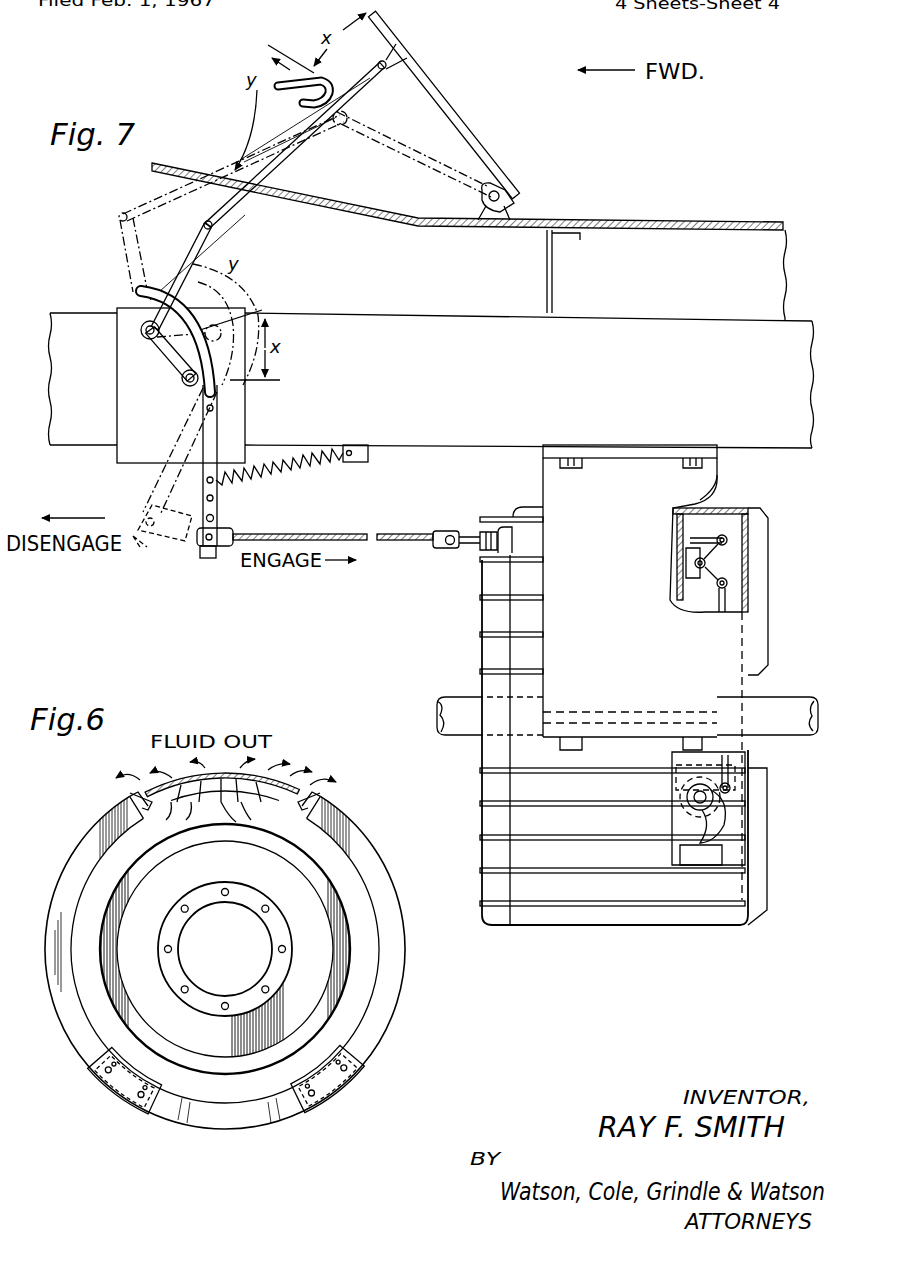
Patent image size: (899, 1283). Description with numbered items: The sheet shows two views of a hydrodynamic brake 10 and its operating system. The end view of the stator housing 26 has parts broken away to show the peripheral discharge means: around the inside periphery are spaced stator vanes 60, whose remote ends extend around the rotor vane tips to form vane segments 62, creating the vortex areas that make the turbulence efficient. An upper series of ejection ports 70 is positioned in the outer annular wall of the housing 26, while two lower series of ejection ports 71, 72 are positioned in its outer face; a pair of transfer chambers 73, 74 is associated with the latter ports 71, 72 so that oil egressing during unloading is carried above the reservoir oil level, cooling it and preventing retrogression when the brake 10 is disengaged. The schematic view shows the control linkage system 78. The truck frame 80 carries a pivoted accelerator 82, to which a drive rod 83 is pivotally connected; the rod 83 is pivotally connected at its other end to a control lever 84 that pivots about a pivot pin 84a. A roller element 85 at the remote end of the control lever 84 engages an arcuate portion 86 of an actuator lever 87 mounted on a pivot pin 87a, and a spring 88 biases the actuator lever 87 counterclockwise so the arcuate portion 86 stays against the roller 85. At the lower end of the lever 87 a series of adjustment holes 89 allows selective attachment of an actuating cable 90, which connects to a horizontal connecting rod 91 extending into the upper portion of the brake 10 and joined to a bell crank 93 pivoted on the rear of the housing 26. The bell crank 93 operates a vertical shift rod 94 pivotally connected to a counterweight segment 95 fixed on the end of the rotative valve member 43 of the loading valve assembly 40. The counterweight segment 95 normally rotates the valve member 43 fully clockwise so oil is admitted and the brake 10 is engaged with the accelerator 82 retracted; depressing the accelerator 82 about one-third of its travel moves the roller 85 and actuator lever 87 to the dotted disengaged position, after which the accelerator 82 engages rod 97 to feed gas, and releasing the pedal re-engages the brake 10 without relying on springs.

In FIG. 7, the brake 10 is at (577, 962).
In FIG. 7, the stator housing 26 is at (688, 508).
In FIG. 7, the loading valve assembly 40 is at (742, 778).
In FIG. 7, the rotative valve member 43 is at (723, 846).
In FIG. 6, the stator vanes 60 is at (270, 782).
In FIG. 6, the vane segments 62 is at (100, 1085).
In FIG. 6, the ejection ports 70 is at (235, 802).
In FIG. 6, the ejection ports 71 is at (150, 1104).
In FIG. 6, the ejection ports 72 is at (295, 1100).
In FIG. 6, the transfer chamber 73 is at (88, 843).
In FIG. 6, the transfer chamber 74 is at (397, 941).
In FIG. 7, the control linkage system 78 is at (88, 265).
In FIG. 7, the frame 80 is at (432, 372).
In FIG. 7, the accelerator 82 is at (432, 86).
In FIG. 7, the drive rod 83 is at (258, 188).
In FIG. 7, the control lever 84 is at (198, 238).
In FIG. 7, the pivot pin 84a is at (145, 334).
In FIG. 7, the roller element 85 is at (186, 382).
In FIG. 7, the arcuate portion 86 is at (138, 292).
In FIG. 7, the actuator lever 87 is at (218, 432).
In FIG. 7, the pivot pin 87a is at (215, 409).
In FIG. 7, the spring 88 is at (270, 470).
In FIG. 7, the adjustment holes 89 is at (215, 520).
In FIG. 7, the actuating cable 90 is at (335, 532).
In FIG. 7, the horizontal connecting rod 91 is at (463, 528).
In FIG. 7, the bell crank 93 is at (728, 551).
In FIG. 7, the vertical shift rod 94 is at (727, 602).
In FIG. 7, the counterweight segment 95 is at (730, 800).
In FIG. 7, the rod 97 is at (293, 100).